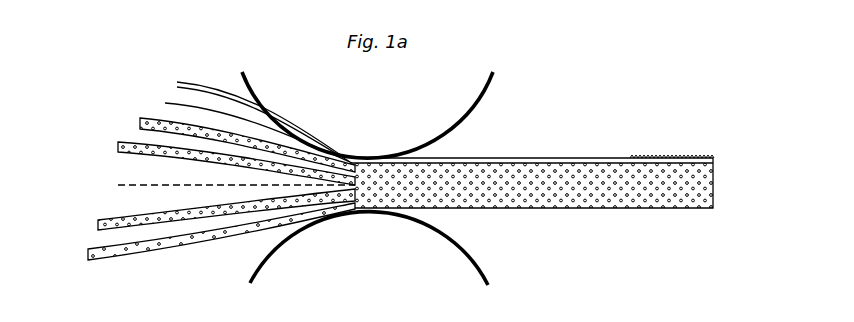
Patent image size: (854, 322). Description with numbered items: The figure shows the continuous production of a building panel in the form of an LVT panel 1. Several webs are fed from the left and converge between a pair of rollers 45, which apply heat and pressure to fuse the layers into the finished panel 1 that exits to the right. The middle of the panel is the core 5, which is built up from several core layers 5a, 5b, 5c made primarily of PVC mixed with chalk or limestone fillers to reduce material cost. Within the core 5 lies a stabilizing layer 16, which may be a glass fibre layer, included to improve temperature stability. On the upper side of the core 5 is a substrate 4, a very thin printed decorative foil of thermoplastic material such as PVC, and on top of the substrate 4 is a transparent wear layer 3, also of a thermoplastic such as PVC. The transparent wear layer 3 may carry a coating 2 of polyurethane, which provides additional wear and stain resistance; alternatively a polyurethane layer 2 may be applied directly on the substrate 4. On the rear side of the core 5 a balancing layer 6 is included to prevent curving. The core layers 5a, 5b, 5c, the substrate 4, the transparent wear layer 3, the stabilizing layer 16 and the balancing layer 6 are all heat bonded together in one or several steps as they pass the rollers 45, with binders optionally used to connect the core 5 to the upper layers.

The LVT panel 1 is at (582, 150).
The coating of polyurethane 2 is at (660, 156).
The transparent wear layer 3 is at (177, 83).
The substrate 4 is at (165, 103).
The core 5 is at (713, 188).
The core layer 5a is at (140, 120).
The core layer 5b is at (118, 146).
The core layer 5c is at (98, 224).
The balancing layer 6 is at (88, 252).
The stabilizing layer 16 is at (118, 185).
The rollers 45 is at (475, 103).